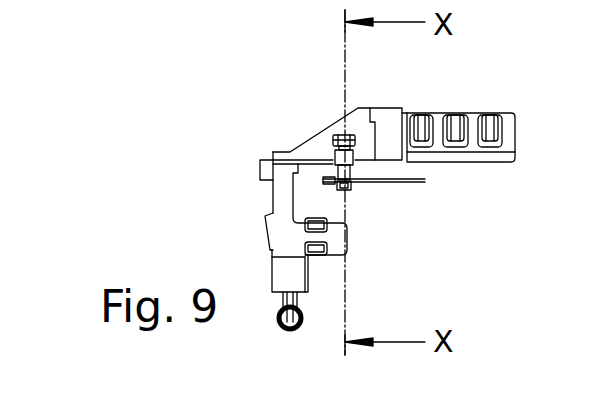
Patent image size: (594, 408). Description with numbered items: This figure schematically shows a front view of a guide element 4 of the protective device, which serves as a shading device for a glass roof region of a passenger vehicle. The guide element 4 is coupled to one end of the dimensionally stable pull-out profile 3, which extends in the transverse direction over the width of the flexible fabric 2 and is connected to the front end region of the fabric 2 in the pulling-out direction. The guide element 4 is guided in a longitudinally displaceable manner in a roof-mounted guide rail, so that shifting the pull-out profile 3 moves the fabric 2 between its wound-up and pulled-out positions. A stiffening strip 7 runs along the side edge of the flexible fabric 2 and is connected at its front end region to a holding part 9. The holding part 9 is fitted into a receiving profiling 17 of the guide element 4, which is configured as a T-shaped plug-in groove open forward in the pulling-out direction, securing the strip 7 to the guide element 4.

The flexible fabric 2 is at (413, 183).
The pull-out profile 3 is at (515, 150).
The guide element 4 is at (323, 130).
The stiffening strip 7 is at (357, 183).
The holding part 9 is at (325, 173).
The receiving profiling 17 is at (359, 130).